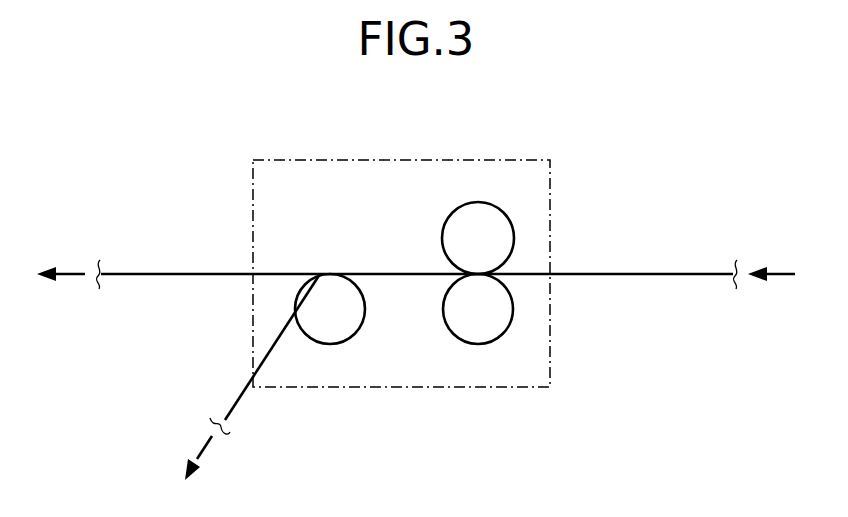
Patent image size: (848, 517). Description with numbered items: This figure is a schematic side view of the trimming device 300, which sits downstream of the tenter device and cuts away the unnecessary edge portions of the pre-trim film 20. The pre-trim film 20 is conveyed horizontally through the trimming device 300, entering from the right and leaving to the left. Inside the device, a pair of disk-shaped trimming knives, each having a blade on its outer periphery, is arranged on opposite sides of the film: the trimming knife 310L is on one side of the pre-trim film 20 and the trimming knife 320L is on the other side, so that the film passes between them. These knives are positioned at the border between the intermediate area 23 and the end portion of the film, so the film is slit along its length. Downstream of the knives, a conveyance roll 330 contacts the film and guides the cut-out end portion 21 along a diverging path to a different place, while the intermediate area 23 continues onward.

The trimming device 300 is at (336, 158).
The trimming knife 310L is at (478, 203).
The trimming knife 320L is at (478, 344).
The conveyance roll 330 is at (330, 344).
The pre-trim film 20 is at (634, 272).
The intermediate area 23 is at (166, 272).
The end portion 21 is at (230, 403).